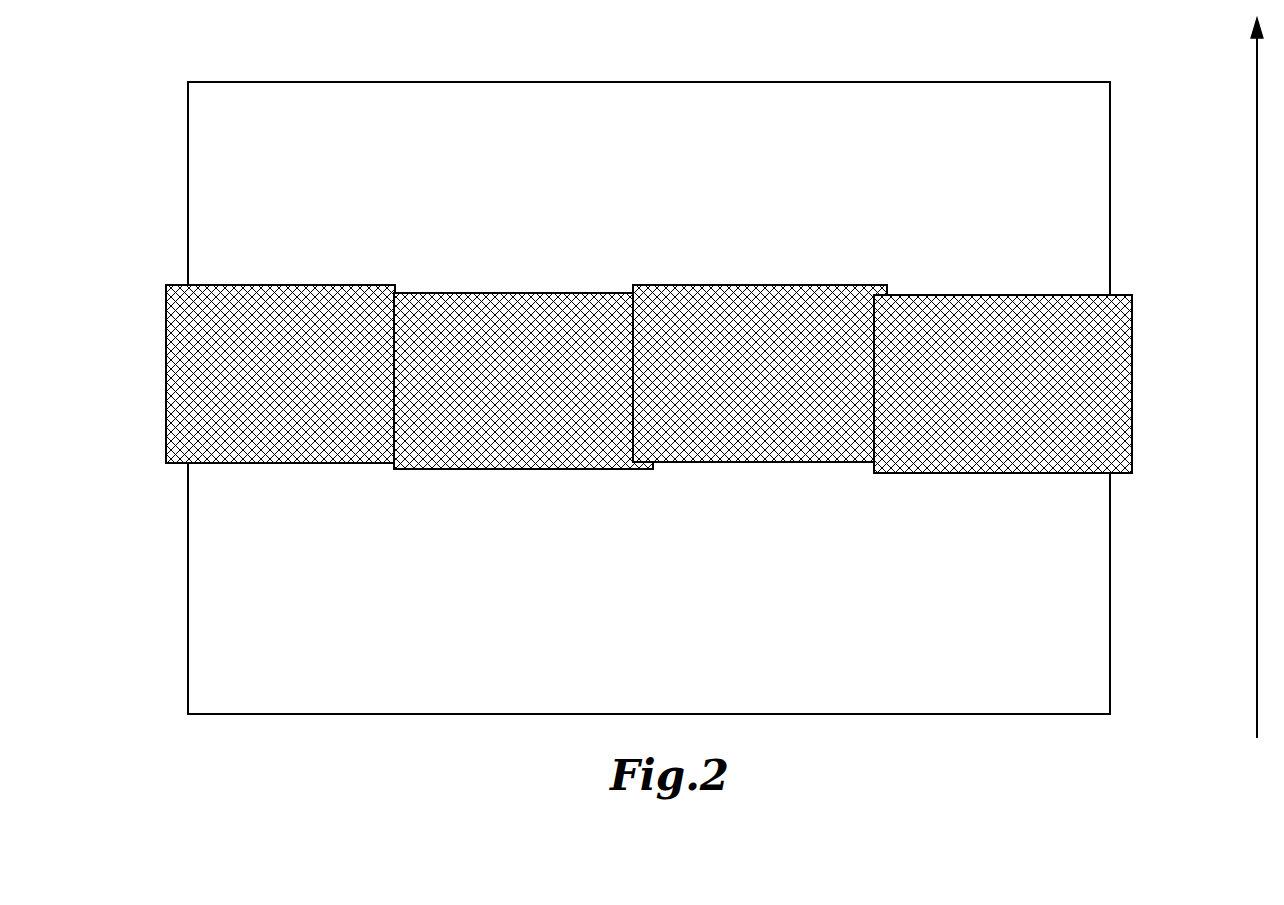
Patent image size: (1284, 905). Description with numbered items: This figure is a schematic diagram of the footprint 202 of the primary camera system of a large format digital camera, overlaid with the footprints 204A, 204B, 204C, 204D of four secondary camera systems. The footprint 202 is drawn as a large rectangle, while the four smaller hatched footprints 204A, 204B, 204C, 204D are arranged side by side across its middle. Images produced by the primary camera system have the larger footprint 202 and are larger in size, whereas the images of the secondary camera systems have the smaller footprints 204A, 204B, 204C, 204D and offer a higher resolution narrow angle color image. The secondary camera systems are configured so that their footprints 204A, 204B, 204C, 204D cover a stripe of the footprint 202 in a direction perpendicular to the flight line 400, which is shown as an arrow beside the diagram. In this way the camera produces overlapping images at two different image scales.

The footprint of the primary camera system 202 is at (201, 220).
The footprint of a secondary camera system 204A is at (1003, 470).
The footprint of a secondary camera system 204B is at (745, 450).
The footprint of a secondary camera system 204C is at (519, 458).
The footprint of a secondary camera system 204D is at (277, 450).
The flight line 400 is at (1257, 148).